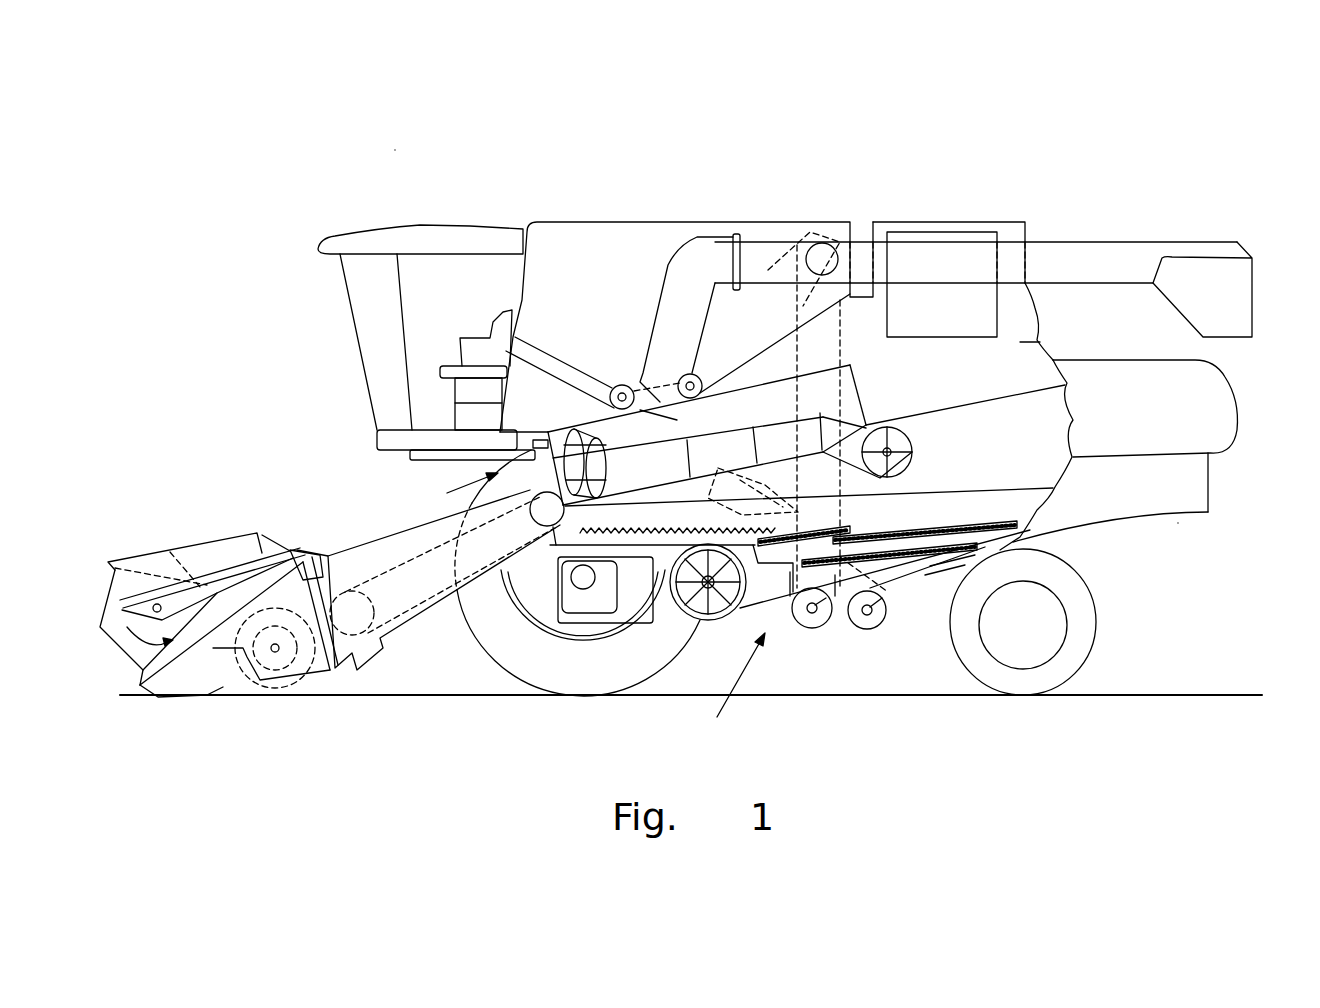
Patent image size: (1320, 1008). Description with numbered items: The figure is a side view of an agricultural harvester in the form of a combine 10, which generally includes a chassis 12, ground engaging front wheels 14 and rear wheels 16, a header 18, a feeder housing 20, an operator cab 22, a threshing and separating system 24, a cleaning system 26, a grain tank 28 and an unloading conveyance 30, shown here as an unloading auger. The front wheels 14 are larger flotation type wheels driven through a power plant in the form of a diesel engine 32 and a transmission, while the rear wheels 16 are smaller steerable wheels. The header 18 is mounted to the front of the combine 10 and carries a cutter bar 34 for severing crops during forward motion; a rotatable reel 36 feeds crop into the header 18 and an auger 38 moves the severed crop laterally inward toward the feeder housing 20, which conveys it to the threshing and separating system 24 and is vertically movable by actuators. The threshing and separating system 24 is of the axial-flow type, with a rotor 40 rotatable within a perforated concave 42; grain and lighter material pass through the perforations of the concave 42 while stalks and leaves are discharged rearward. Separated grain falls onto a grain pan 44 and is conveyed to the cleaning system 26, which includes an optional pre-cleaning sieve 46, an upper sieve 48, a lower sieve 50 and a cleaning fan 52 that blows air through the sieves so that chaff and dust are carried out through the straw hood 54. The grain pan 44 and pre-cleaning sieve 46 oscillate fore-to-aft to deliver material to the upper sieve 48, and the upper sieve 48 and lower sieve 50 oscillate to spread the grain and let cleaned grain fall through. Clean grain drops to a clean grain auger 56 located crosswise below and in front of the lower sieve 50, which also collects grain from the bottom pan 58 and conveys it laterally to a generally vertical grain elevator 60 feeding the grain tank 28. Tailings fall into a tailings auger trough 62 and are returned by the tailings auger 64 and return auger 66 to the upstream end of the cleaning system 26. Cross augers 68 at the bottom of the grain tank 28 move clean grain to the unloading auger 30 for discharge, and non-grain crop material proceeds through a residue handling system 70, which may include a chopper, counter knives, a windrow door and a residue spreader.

The combine 10 is at (414, 204).
The chassis 12 is at (1040, 543).
The front wheels 14 is at (493, 657).
The rear wheels 16 is at (1093, 640).
The header 18 is at (188, 522).
The feeder housing 20 is at (390, 538).
The operator cab 22 is at (345, 322).
The threshing and separating system 24 is at (458, 492).
The cleaning system 26 is at (740, 688).
The grain tank 28 is at (579, 226).
The unloading conveyance 30 is at (1113, 250).
The diesel engine 32 is at (930, 240).
The cutter bar 34 is at (205, 697).
The rotatable reel 36 is at (103, 597).
The auger 38 is at (275, 665).
The rotor 40 is at (572, 430).
The perforated concave 42 is at (748, 413).
The grain pan 44 is at (557, 553).
The pre-cleaning sieve 46 is at (847, 527).
The upper sieve 48 is at (943, 528).
The lower sieve 50 is at (910, 553).
The cleaning fan 52 is at (703, 623).
The straw hood 54 is at (1217, 398).
The clean grain auger 56 is at (820, 625).
The bottom pan 58 is at (957, 567).
The grain elevator 60 is at (840, 343).
The tailings auger trough 62 is at (940, 567).
The tailings auger 64 is at (867, 628).
The return auger 66 is at (786, 503).
The cross augers 68 is at (618, 385).
The residue handling system 70 is at (1186, 530).